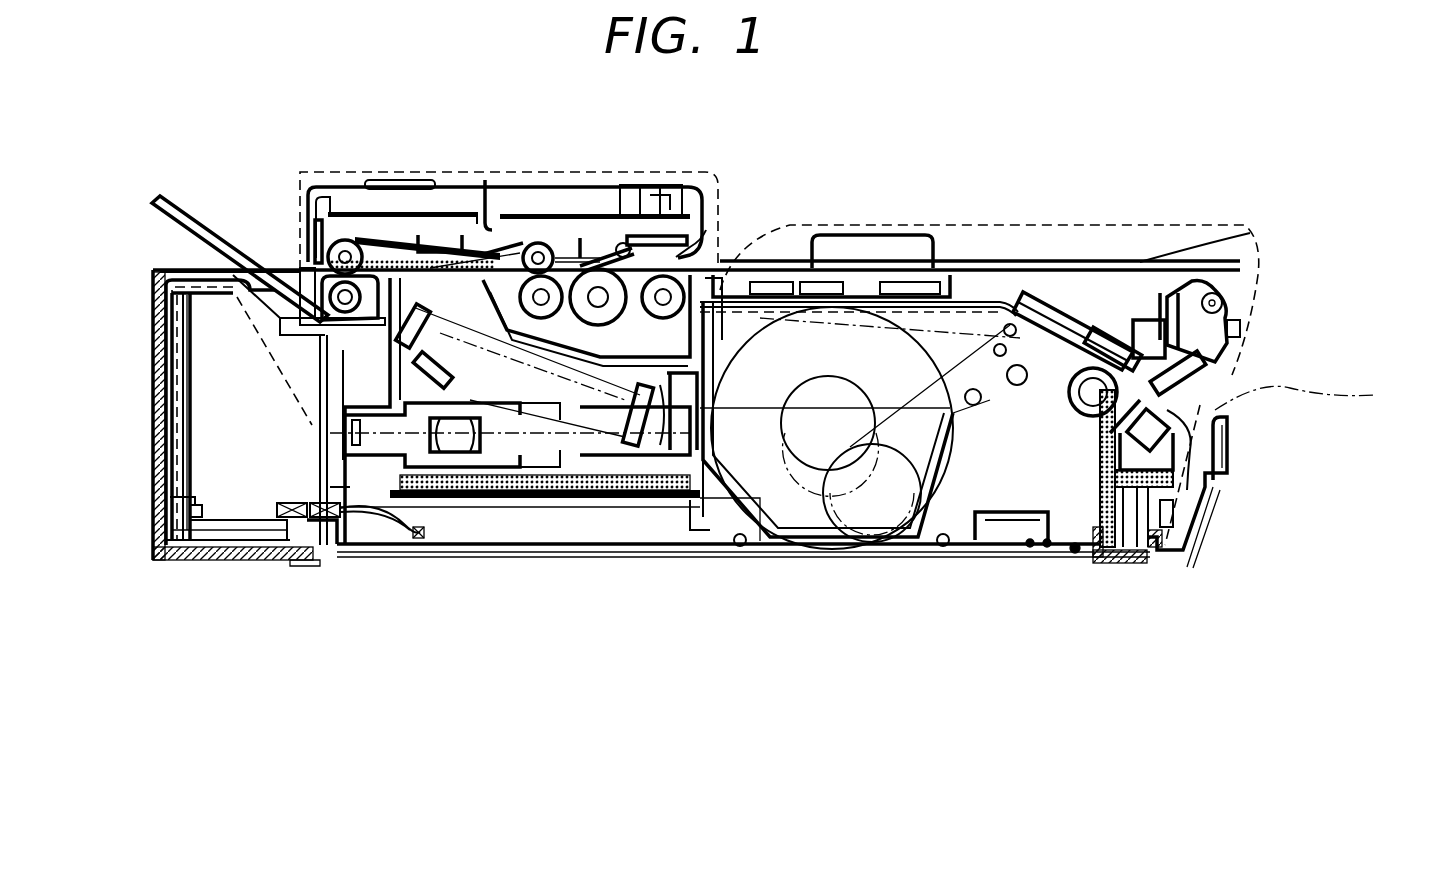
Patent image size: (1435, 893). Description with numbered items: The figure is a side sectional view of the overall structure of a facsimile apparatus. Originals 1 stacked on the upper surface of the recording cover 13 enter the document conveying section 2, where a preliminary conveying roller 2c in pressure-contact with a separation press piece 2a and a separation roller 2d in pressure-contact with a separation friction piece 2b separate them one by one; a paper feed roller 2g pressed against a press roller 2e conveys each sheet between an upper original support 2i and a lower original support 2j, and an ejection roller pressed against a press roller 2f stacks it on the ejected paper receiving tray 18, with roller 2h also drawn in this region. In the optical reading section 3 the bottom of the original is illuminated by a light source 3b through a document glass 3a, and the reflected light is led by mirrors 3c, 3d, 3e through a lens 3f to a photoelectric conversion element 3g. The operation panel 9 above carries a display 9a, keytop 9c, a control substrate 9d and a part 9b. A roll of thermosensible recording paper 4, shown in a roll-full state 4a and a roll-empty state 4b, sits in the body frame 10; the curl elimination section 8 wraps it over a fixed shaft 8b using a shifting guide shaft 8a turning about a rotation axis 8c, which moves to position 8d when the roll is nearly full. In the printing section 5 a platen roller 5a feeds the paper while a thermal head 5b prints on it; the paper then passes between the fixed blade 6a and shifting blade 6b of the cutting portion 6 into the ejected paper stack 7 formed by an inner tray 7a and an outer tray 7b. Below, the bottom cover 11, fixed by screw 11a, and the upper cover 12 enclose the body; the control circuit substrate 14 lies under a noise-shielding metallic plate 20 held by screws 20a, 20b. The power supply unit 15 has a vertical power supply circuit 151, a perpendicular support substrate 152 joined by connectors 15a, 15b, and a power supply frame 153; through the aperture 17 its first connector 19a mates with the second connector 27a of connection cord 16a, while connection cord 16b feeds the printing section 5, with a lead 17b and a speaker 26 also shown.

The original 1 is at (1100, 260).
The document conveying section 2 is at (523, 230).
The separation press piece 2a is at (677, 253).
The separation friction piece 2b is at (620, 217).
The preliminary conveying roller 2c is at (718, 250).
The separation roller 2d is at (603, 240).
The press roller 2e is at (557, 243).
The press roller 2f is at (337, 247).
The paper feed roller 2g is at (540, 247).
The feed roller 2h is at (322, 292).
The upper original support 2i is at (507, 233).
The lower original support 2j is at (580, 243).
The optical reading section 3 is at (690, 420).
The document glass 3a is at (395, 300).
The light source 3b is at (480, 260).
The mirror 3c is at (392, 367).
The mirror 3d is at (706, 522).
The mirror 3e is at (378, 262).
The lens 3f is at (600, 455).
The photoelectric conversion element 3g is at (357, 437).
The thermosensible recording paper 4 is at (1107, 357).
The roll-full state 4a is at (813, 500).
The roll-empty state 4b is at (892, 540).
The printing section 5 is at (1187, 286).
The platen roller 5a is at (1085, 415).
The thermal head 5b is at (1137, 327).
The record paper cutting portion 6 is at (1167, 458).
The fixed blade 6a is at (1230, 380).
The rotationally shifting blade 6b is at (1247, 380).
The ejected paper stack 7 is at (1227, 458).
The inner tray 7a is at (1187, 497).
The outer tray 7b is at (1205, 490).
The record paper curling elimination section 8 is at (983, 327).
The shifting guide shaft 8a is at (1000, 343).
The fixed shaft 8b is at (990, 410).
The rotation axis 8c is at (1017, 386).
The guide shaft position 8d is at (970, 389).
The operation panel 9 is at (493, 200).
The display 9a is at (455, 200).
The roller part 9b is at (630, 200).
The keytop 9c is at (640, 212).
The operation panel control substrate 9d is at (662, 212).
The body frame 10 is at (655, 500).
The bottom cover 11 is at (488, 558).
The screw 11a is at (1073, 553).
The upper cover 12 is at (158, 272).
The recording cover 13 is at (780, 273).
The control circuit substrate 14 is at (505, 470).
The power supply unit 15 is at (195, 350).
The power supply circuit 151 is at (175, 385).
The support substrate 152 is at (237, 542).
The power supply frame 153 is at (172, 425).
The connector 15a is at (175, 497).
The connector 15b is at (197, 505).
The connection cord 16a is at (428, 522).
The connection cord 16b is at (488, 450).
The aperture 17 is at (310, 497).
The transformer lead 17b is at (690, 530).
The ejected paper receiving tray 18 is at (158, 200).
The first connector 19a is at (276, 508).
The metallic plate 20 is at (640, 473).
The screw 20a is at (337, 487).
The screw 20b is at (745, 545).
The speaker 26 is at (1020, 553).
The second connector 27a is at (360, 546).